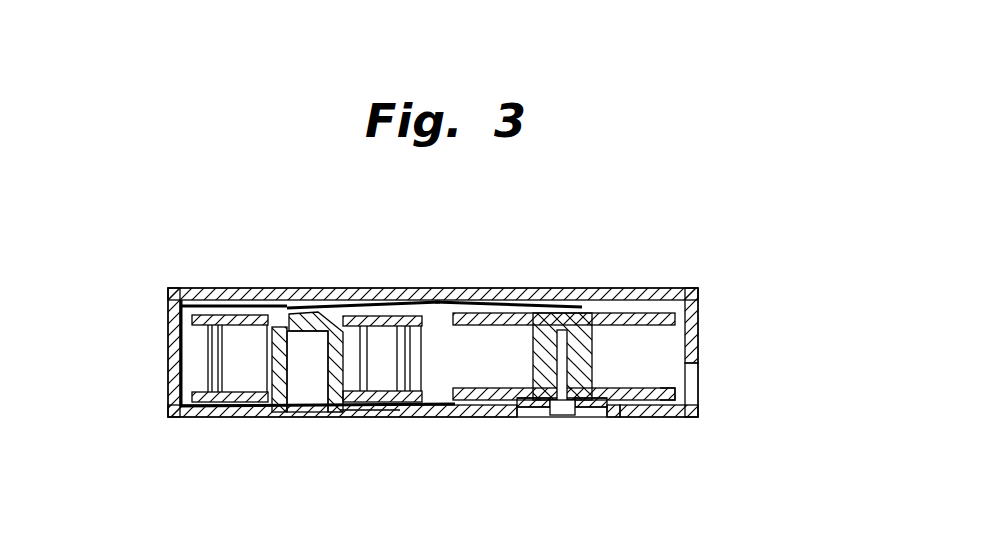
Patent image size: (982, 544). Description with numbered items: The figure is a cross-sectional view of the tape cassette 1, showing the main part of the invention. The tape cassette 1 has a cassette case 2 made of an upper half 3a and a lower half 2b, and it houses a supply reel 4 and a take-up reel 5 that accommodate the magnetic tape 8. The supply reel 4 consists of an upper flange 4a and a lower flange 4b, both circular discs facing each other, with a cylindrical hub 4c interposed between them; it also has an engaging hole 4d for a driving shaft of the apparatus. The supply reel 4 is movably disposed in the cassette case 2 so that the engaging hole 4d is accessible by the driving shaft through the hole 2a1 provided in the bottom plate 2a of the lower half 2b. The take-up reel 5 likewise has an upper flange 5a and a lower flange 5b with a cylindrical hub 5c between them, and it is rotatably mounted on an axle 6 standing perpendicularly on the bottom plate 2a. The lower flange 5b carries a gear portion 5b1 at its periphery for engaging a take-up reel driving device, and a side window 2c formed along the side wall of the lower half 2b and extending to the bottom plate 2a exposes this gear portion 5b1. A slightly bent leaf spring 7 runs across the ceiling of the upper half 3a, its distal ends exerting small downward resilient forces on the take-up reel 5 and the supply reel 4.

The tape cassette 1 is at (547, 223).
The cassette case 2 is at (167, 378).
The bottom plate of the lower half 2a is at (430, 417).
The hole in the bottom 2a1 is at (364, 410).
The lower half 2b is at (698, 363).
The side window 2c is at (680, 417).
The upper half 3a is at (168, 335).
The supply reel 4 is at (256, 316).
The upper flange of supply reel 4a is at (228, 323).
The lower flange of supply reel 4b is at (207, 405).
The cylindrical hub of supply reel 4c is at (272, 364).
The engaging hole 4d is at (327, 375).
The take-up reel 5 is at (622, 311).
The upper flange of take-up reel 5a is at (663, 315).
The lower flange of take-up reel 5b is at (638, 414).
The gear portion 5b1 is at (676, 393).
The cylindrical hub of take-up reel 5c is at (531, 362).
The axle 6 is at (560, 416).
The leaf spring 7 is at (340, 314).
The magnetic tape 8 is at (420, 360).